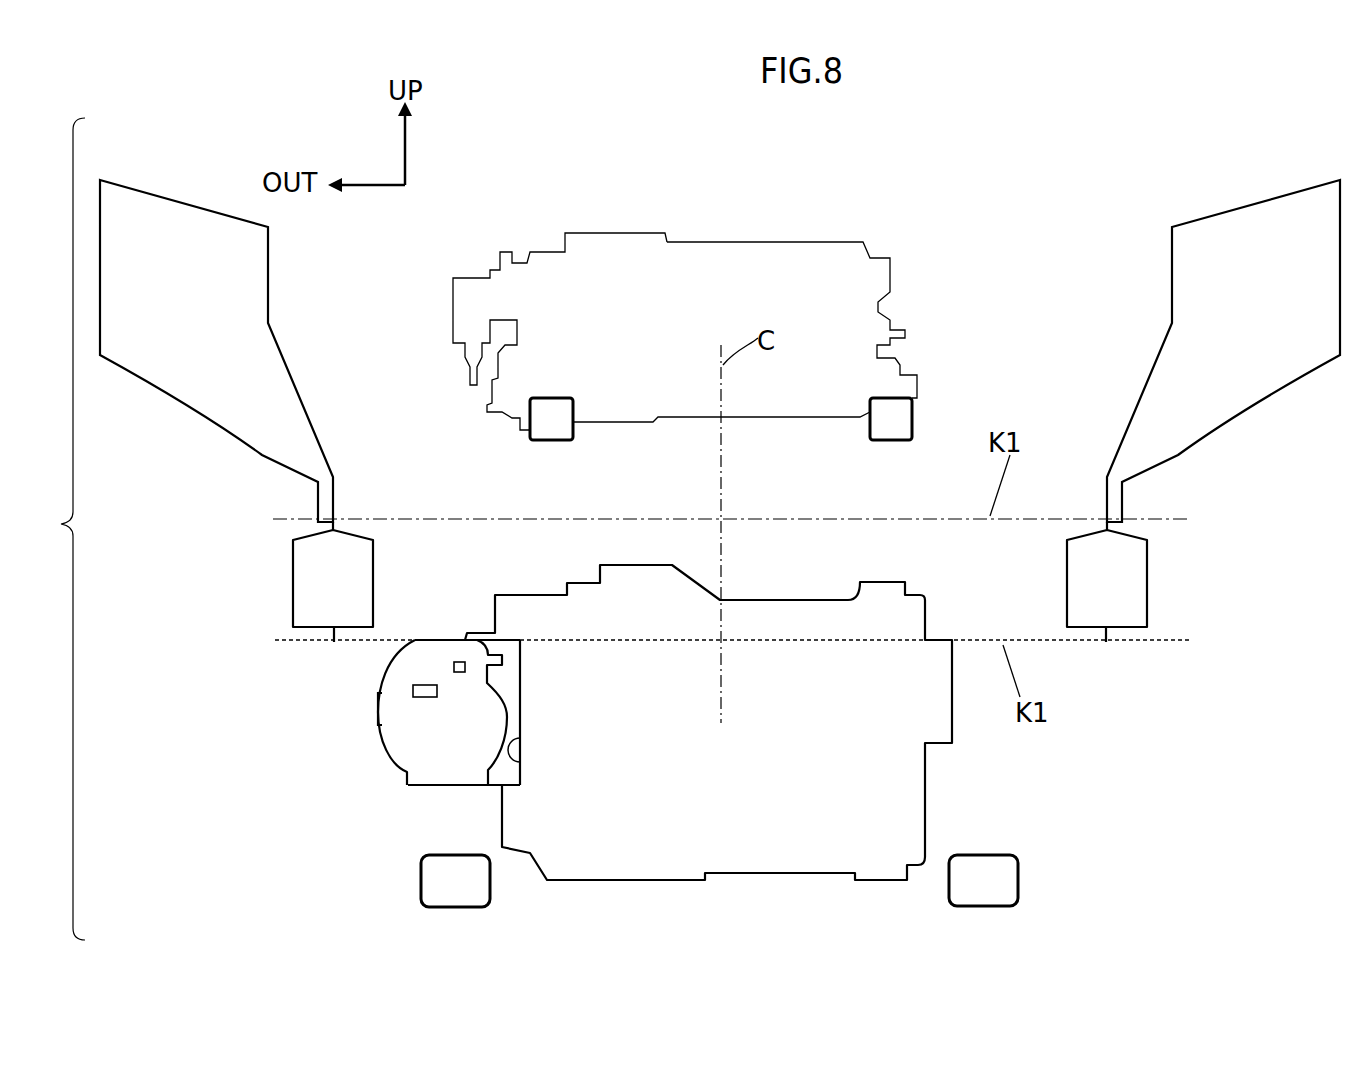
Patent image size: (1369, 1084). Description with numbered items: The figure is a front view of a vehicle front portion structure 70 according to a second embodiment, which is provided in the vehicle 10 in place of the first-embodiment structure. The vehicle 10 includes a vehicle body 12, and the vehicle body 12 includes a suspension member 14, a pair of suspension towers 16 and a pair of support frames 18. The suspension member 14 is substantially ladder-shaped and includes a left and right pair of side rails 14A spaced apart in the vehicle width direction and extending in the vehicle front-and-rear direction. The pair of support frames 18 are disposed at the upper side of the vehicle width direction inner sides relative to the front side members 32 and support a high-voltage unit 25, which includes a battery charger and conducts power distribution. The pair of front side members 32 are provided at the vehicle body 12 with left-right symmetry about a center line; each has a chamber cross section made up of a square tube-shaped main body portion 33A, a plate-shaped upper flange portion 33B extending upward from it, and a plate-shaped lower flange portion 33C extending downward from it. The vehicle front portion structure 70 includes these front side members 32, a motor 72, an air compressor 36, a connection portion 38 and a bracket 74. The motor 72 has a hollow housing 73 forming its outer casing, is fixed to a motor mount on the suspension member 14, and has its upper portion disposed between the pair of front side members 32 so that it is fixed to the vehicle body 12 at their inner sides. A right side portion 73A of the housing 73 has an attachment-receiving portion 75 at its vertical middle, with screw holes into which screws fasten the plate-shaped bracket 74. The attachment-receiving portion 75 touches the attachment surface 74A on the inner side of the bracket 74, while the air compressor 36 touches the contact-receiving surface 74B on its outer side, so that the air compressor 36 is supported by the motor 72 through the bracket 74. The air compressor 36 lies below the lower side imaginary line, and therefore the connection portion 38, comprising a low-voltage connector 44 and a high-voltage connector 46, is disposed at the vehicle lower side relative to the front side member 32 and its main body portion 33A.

The vehicle 10 is at (1067, 180).
The vehicle body 12 is at (1222, 425).
The suspension member 14 is at (1022, 880).
The side rail 14A is at (419, 882).
The suspension tower 16 is at (275, 268).
The support frame 18 is at (553, 446).
The high-voltage unit 25 is at (727, 240).
The front side member 32 is at (290, 592).
The main body portion 33A is at (290, 565).
The upper flange portion 33B is at (338, 521).
The lower flange portion 33C is at (328, 641).
The air compressor 36 is at (375, 710).
The connection portion 38 is at (435, 666).
The low-voltage connector 44 is at (458, 658).
The high-voltage connector 46 is at (422, 703).
The vehicle front portion structure 70 is at (451, 692).
The motor 72 is at (927, 768).
The housing 73 is at (782, 858).
The right side portion 73A is at (502, 812).
The bracket 74 is at (525, 682).
The attachment surface 74A is at (522, 710).
The contact-receiving surface 74B is at (505, 727).
The attachment-receiving portion 75 is at (522, 757).